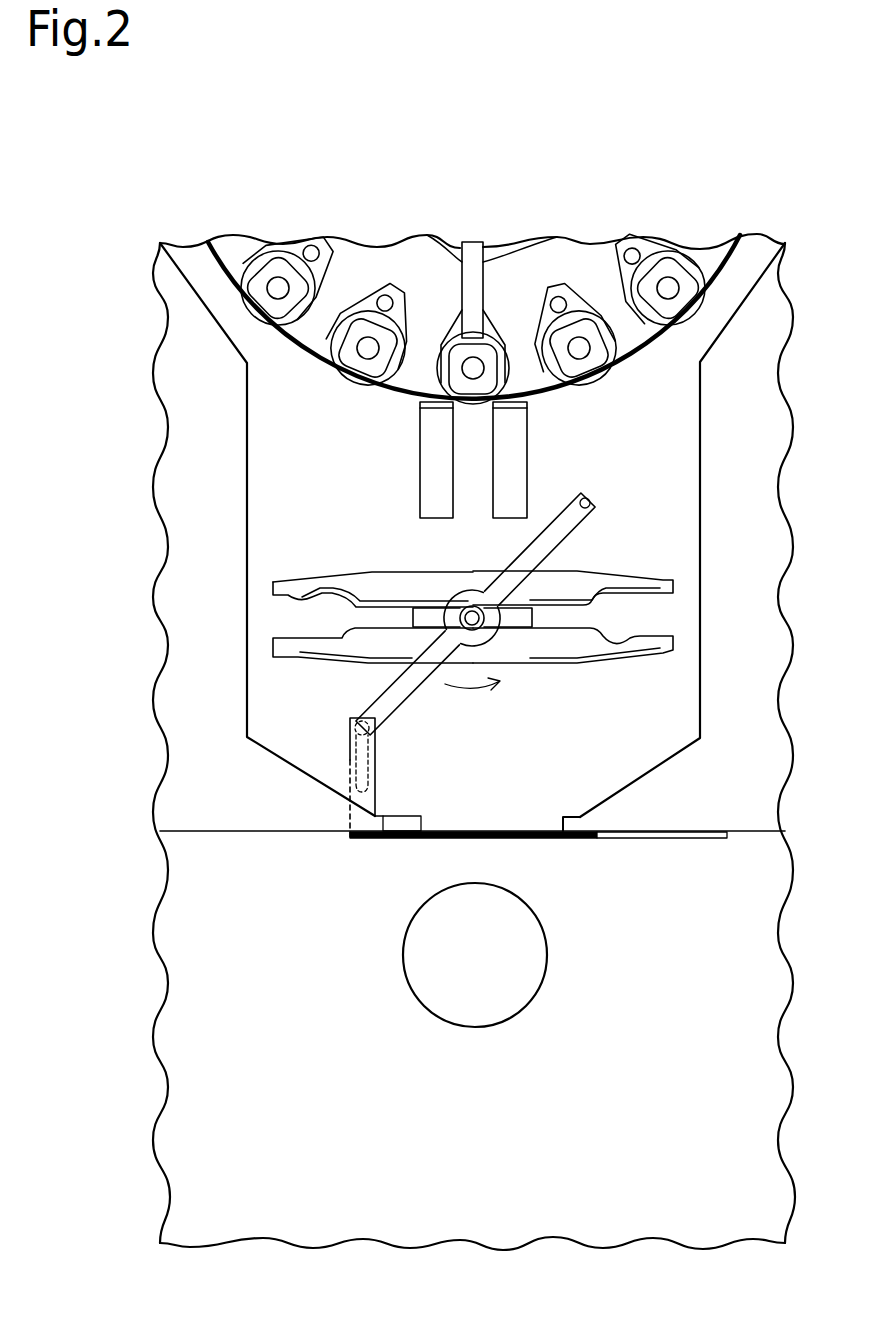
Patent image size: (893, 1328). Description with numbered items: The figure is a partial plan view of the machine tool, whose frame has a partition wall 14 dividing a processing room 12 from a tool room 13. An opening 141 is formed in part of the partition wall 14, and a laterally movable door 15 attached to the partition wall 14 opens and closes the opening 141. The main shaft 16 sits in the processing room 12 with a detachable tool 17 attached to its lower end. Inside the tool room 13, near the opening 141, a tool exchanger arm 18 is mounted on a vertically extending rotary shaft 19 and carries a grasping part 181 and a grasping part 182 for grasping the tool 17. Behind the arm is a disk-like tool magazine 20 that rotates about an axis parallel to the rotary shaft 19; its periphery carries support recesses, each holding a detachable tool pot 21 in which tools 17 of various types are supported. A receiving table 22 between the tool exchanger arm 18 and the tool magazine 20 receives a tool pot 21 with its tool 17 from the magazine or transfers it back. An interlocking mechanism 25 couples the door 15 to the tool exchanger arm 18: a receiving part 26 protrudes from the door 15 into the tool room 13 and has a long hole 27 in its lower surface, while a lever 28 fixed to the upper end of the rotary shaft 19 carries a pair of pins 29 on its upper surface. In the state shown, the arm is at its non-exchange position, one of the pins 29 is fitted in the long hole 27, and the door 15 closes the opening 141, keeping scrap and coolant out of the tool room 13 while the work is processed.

The processing room 12 is at (646, 863).
The tool room 13 is at (472, 530).
The partition wall 14 is at (277, 833).
The opening 141 is at (561, 824).
The door 15 is at (405, 834).
The main shaft 16 is at (407, 928).
The tool 17 is at (318, 376).
The tool exchanger arm 18 is at (394, 578).
The grasping part 181 is at (289, 602).
The grasping part 182 is at (656, 600).
The rotary shaft 19 is at (470, 604).
The tool magazine 20 is at (722, 262).
The tool pot 21 is at (488, 318).
The receiving table 22 is at (432, 479).
The interlocking mechanism 25 is at (415, 692).
The receiving part 26 is at (350, 757).
The long hole 27 is at (366, 767).
The lever 28 is at (567, 527).
The pins 29 is at (593, 499).